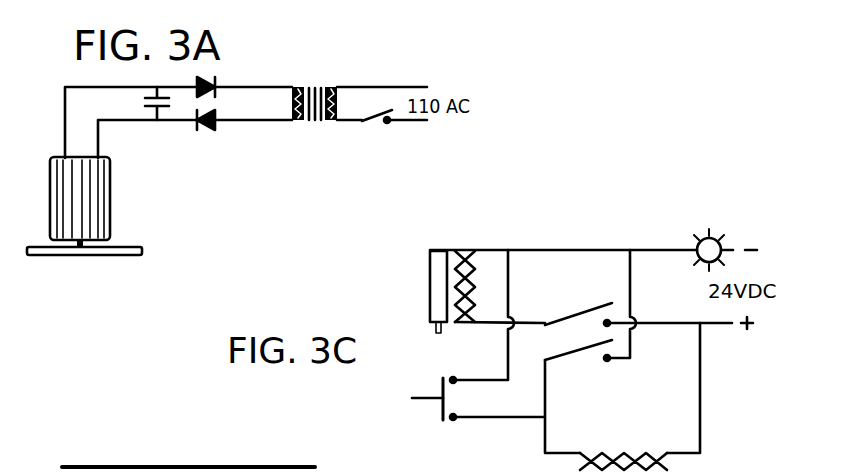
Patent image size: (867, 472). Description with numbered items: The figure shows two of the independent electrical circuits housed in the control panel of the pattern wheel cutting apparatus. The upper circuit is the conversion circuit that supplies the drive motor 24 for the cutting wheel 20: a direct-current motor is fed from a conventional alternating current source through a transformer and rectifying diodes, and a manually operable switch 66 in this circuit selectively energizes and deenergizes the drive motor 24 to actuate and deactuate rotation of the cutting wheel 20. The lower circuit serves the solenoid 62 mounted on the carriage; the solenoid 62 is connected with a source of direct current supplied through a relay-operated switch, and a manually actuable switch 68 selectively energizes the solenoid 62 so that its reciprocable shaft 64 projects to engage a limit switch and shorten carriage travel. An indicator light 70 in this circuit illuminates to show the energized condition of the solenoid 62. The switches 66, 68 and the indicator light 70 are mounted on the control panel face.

In FIG. 3A, the cutting wheel 20 is at (122, 256).
In FIG. 3A, the drive motor 24 is at (95, 203).
In FIG. 3C, the solenoid 62 is at (432, 282).
In FIG. 3C, the reciprocable shaft 64 is at (440, 332).
In FIG. 3A, the manually actuable switch 66 is at (376, 117).
In FIG. 3C, the manually actuable switch 68 is at (412, 398).
In FIG. 3C, the indicator light 70 is at (698, 238).